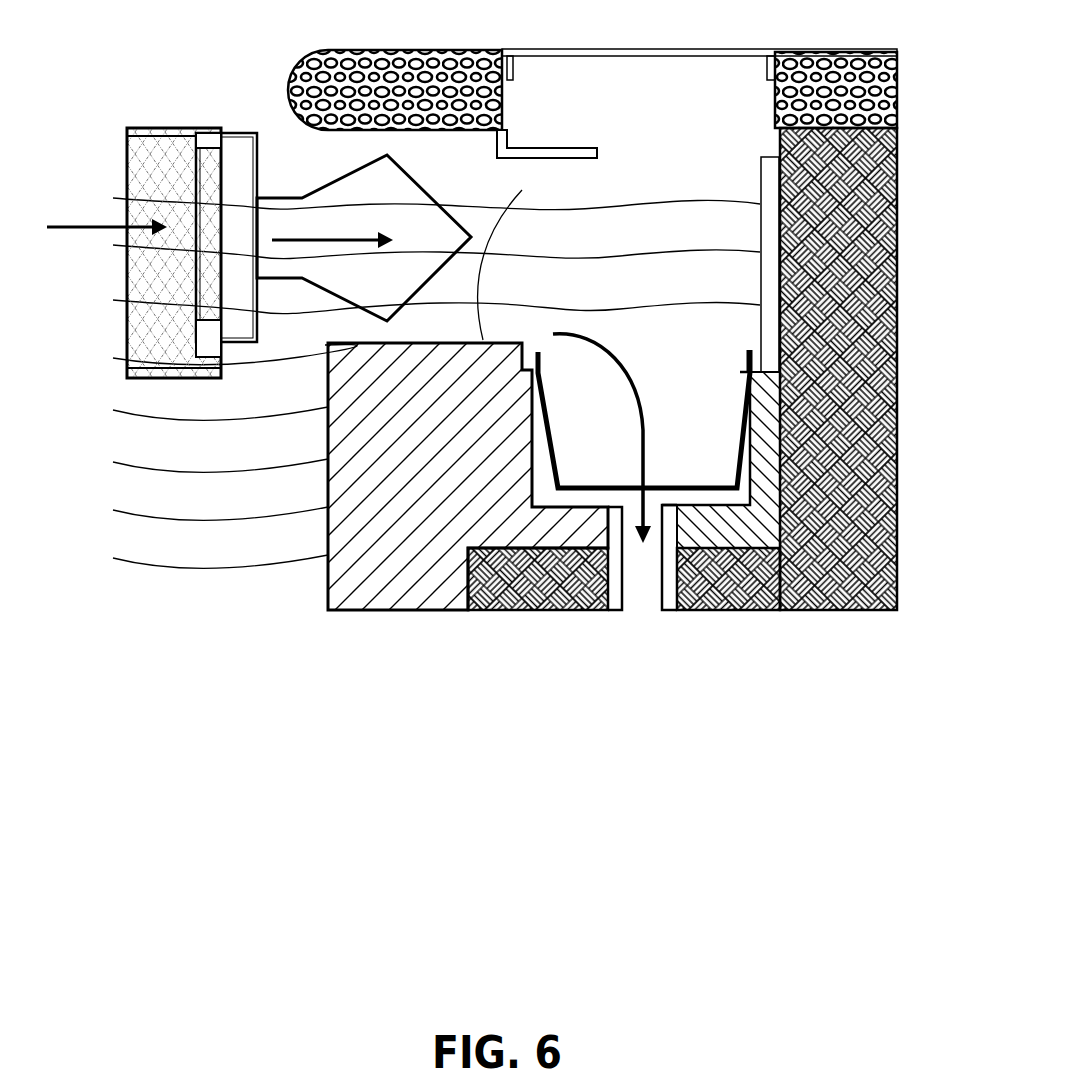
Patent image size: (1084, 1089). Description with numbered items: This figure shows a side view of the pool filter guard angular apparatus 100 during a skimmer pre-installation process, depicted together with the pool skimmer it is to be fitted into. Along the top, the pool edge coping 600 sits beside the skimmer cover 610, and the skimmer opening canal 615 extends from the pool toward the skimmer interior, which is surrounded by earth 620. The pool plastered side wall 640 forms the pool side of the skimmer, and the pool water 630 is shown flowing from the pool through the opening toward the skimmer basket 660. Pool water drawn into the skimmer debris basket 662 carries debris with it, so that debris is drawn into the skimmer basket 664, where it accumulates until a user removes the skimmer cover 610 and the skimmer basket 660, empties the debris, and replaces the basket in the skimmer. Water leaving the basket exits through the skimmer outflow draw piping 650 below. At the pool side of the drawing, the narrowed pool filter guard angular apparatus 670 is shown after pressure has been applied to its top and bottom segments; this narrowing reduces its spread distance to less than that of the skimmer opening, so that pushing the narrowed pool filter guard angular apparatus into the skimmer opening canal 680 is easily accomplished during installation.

The pool filter guard angular apparatus 100 is at (186, 85).
The pool edge coping 600 is at (387, 62).
The skimmer cover 610 is at (613, 50).
The skimmer opening canal 615 is at (462, 130).
The earth 620 is at (885, 193).
The pool water 630 is at (120, 561).
The pool plastered side wall 640 is at (325, 570).
The skimmer outflow draw piping 650 is at (622, 595).
The skimmer basket 660 is at (560, 447).
The pool water drawn into skimmer debris basket 662 is at (613, 352).
The debris drawn into skimmer basket 664 is at (745, 374).
The narrowed pool filter guard angular apparatus 670 is at (320, 182).
The skimmer opening canal 680 is at (83, 225).